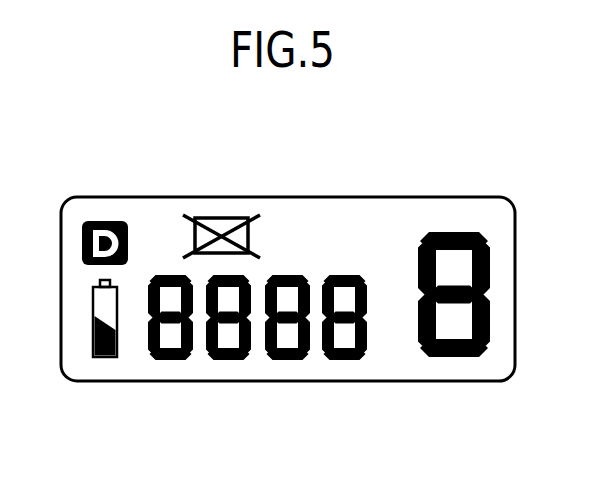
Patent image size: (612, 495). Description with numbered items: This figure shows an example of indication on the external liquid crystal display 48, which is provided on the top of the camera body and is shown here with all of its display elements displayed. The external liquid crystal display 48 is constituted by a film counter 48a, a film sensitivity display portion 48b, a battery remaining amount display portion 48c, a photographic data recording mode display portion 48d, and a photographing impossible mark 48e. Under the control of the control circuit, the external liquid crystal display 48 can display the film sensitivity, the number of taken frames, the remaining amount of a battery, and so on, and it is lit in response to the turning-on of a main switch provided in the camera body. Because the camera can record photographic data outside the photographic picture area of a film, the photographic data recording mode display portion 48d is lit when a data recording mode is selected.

The external liquid crystal display 48 is at (451, 189).
The film counter 48a is at (462, 368).
The film sensitivity display portion 48b is at (355, 365).
The battery remaining amount display portion 48c is at (103, 365).
The photographic data recording mode display portion 48d is at (108, 221).
The photographing impossible mark 48e is at (223, 217).